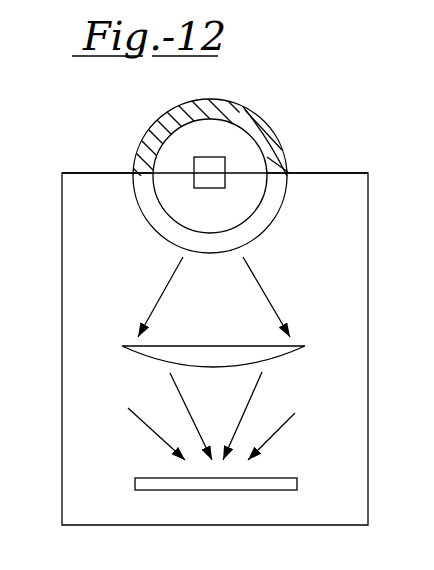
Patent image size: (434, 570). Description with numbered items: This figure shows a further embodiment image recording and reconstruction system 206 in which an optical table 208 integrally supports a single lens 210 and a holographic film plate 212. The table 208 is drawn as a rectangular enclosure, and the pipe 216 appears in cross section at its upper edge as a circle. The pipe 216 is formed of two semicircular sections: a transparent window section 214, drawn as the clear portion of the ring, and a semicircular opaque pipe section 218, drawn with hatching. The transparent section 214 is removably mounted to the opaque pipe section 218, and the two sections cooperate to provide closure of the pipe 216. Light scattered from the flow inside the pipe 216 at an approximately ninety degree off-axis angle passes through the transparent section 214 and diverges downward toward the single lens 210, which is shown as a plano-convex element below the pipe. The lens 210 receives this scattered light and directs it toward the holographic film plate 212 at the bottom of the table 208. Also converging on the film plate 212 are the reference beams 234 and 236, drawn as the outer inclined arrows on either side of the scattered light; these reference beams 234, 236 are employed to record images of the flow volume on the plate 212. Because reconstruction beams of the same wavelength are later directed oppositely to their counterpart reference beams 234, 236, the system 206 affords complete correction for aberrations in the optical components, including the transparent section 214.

The image recording and reconstruction system 206 is at (138, 140).
The optical table 208 is at (62, 280).
The single lens 210 is at (305, 346).
The holographic film plate 212 is at (208, 490).
The transparent window section 214 is at (268, 231).
The pipe 216 is at (288, 162).
The opaque pipe section 218 is at (210, 100).
The reference beam 234 is at (160, 440).
The reference beam 236 is at (278, 432).